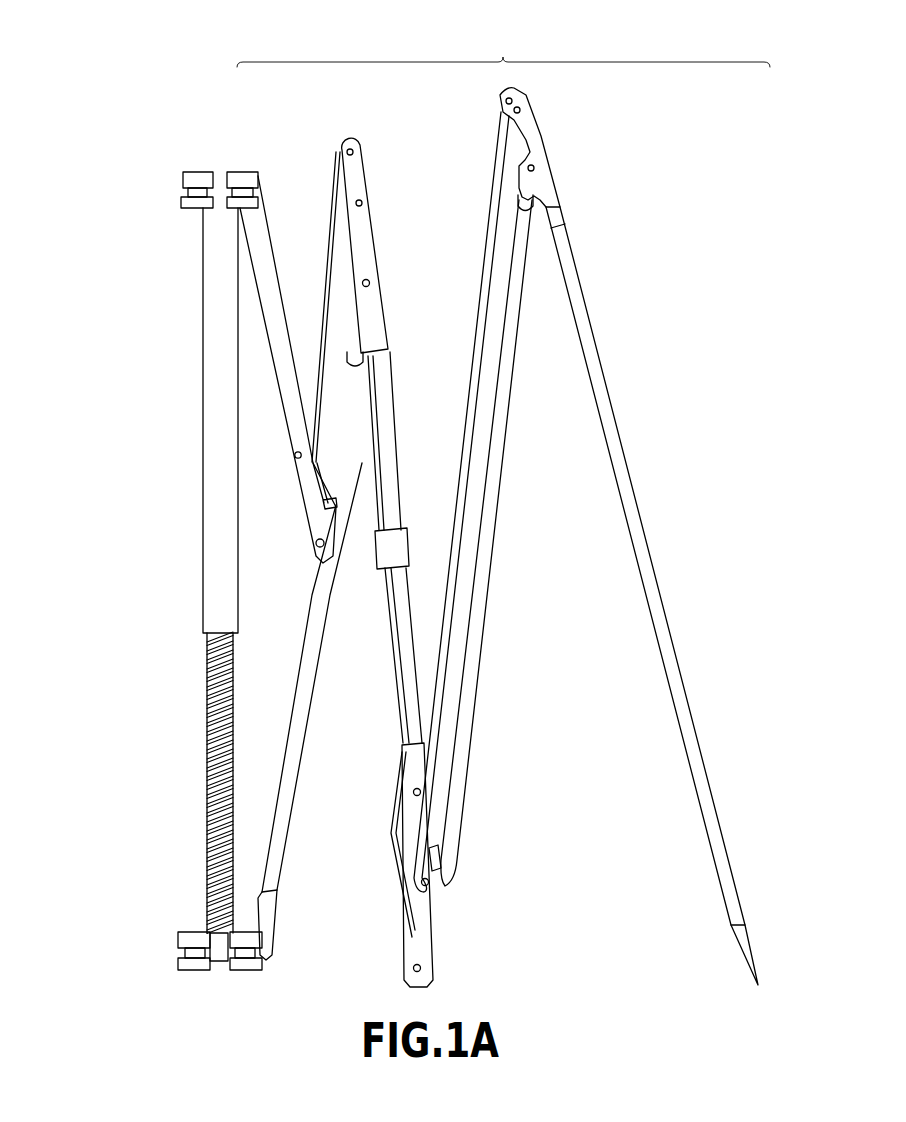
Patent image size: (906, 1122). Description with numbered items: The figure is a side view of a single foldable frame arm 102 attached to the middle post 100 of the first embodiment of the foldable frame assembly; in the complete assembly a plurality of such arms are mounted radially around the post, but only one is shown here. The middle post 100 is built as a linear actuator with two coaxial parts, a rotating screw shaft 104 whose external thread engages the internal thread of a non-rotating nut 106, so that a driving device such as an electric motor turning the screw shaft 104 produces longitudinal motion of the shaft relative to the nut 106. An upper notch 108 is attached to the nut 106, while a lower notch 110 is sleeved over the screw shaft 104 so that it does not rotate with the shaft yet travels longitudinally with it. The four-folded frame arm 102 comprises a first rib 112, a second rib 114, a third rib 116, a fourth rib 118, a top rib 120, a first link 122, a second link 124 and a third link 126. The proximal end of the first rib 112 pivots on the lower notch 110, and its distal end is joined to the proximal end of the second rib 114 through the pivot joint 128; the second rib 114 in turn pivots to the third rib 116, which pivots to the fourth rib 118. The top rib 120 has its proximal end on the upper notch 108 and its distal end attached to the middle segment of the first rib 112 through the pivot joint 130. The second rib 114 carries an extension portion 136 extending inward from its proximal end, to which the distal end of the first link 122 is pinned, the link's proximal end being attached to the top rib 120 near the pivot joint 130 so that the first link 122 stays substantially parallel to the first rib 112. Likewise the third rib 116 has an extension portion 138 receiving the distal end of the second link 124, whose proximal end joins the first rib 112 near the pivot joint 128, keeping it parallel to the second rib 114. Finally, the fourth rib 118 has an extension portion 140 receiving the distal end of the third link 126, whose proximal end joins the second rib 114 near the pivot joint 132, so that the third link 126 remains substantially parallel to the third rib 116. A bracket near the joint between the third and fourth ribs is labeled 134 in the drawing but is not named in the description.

The middle post 100 is at (190, 565).
The foldable frame arm 102 is at (503, 39).
The rotating screw shaft 104 is at (207, 745).
The non-rotating nut 106 is at (222, 482).
The upper notch 108 is at (200, 188).
The lower notch 110 is at (203, 940).
The first rib 112 is at (270, 855).
The second rib 114 is at (380, 420).
The third rib 116 is at (470, 720).
The fourth rib 118 is at (655, 590).
The top rib 120 is at (272, 340).
The first link 122 is at (333, 237).
The second link 124 is at (397, 880).
The third link 126 is at (493, 233).
The pivot joint 128 is at (365, 283).
The pivot joint 130 is at (325, 503).
The pivot joint 132 is at (430, 855).
The joint 134 is at (533, 170).
The extension portion 136 is at (348, 150).
The extension portion 138 is at (420, 950).
The extension portion 140 is at (532, 138).